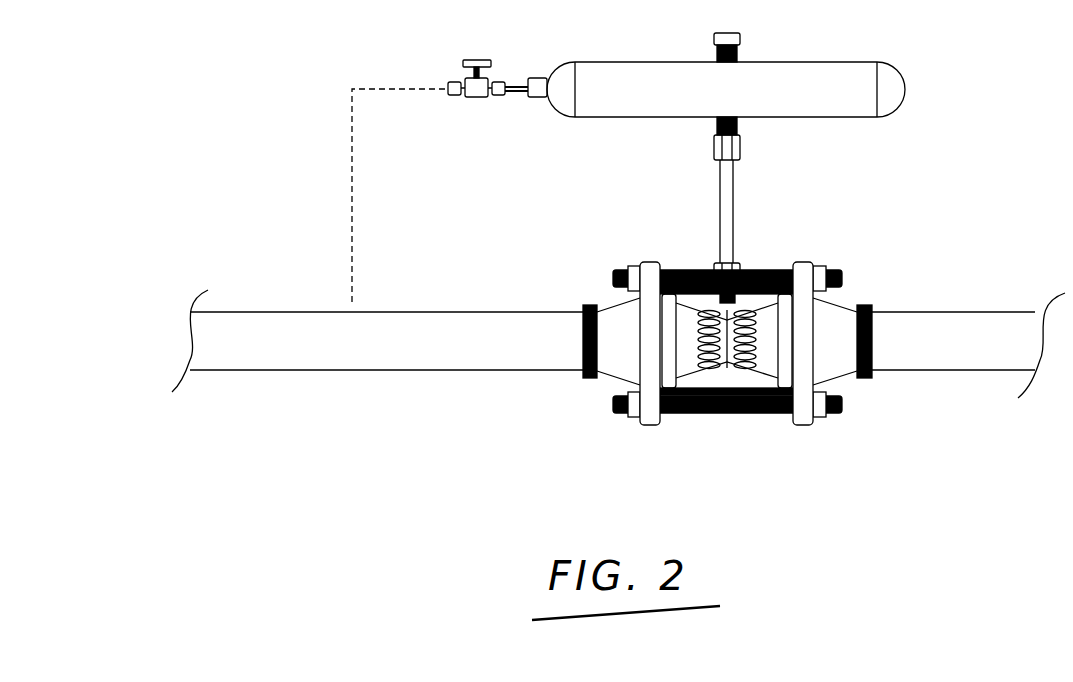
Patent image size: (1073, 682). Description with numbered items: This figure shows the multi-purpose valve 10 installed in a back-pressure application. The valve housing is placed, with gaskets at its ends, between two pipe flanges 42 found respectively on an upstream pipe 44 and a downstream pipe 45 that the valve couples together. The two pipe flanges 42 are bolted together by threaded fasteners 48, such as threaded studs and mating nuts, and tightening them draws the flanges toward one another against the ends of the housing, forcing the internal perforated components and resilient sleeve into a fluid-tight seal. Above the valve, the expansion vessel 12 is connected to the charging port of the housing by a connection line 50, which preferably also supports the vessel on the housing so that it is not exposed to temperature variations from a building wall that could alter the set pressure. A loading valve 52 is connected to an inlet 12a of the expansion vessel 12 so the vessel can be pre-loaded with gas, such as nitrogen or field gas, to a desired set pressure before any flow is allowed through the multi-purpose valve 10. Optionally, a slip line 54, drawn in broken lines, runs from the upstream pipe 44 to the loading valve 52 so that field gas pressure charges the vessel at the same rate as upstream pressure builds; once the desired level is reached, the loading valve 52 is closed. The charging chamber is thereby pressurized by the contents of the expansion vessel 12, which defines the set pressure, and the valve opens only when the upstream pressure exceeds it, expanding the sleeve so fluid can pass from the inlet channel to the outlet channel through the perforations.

The multi-purpose valve 10 is at (772, 338).
The expansion vessel 12 is at (820, 81).
The inlet of the expansion vessel 12a is at (540, 78).
The pipe flanges 42 is at (645, 283).
The upstream pipe 44 is at (360, 325).
The downstream pipe 45 is at (958, 320).
The threaded fasteners 48 is at (760, 267).
The connection line 50 is at (728, 215).
The loading valve 52 is at (478, 92).
The slip line 54 is at (360, 165).